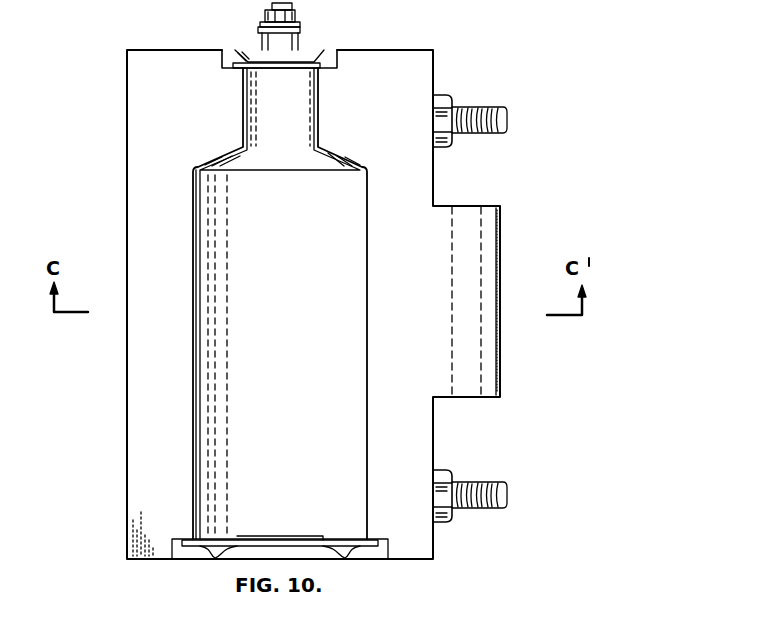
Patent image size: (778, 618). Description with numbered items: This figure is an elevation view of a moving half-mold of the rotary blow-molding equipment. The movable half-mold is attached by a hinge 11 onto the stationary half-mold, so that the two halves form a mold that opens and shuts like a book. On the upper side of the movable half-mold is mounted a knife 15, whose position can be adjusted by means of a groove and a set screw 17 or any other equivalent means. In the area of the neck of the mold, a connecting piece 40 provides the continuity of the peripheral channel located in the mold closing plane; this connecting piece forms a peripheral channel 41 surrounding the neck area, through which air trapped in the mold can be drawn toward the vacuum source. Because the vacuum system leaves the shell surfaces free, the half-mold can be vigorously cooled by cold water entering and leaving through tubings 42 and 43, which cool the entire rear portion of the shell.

The hinge 11 is at (496, 300).
The knife 15 is at (300, 30).
The set screw 17 is at (266, 14).
The connecting piece 40 is at (333, 56).
The peripheral channel 41 is at (322, 68).
The tubing 42 is at (507, 122).
The tubing 43 is at (506, 498).